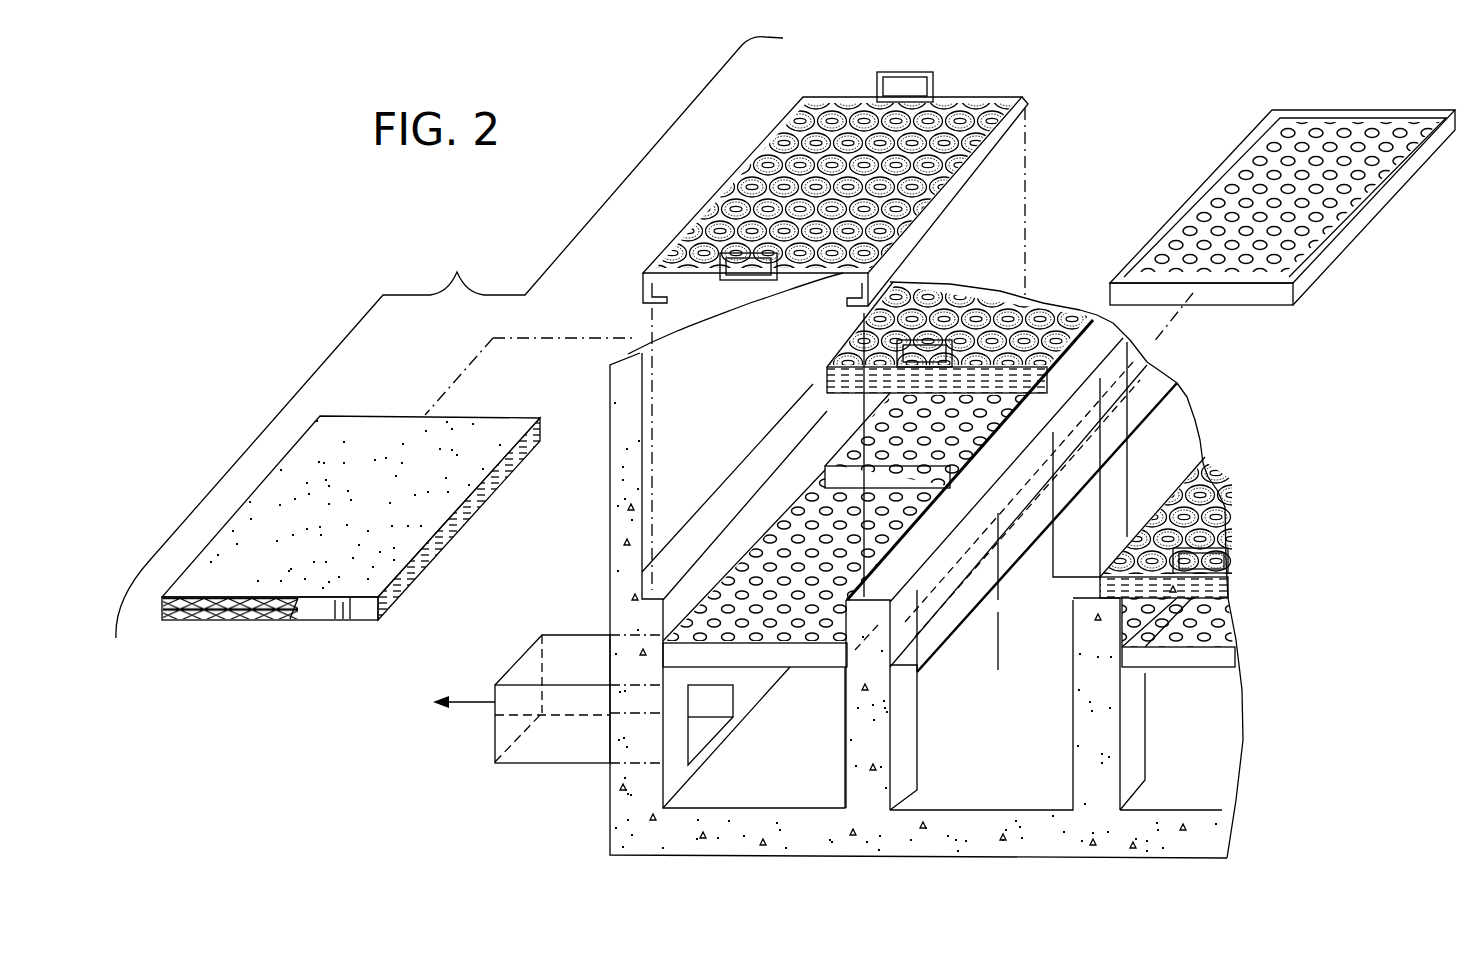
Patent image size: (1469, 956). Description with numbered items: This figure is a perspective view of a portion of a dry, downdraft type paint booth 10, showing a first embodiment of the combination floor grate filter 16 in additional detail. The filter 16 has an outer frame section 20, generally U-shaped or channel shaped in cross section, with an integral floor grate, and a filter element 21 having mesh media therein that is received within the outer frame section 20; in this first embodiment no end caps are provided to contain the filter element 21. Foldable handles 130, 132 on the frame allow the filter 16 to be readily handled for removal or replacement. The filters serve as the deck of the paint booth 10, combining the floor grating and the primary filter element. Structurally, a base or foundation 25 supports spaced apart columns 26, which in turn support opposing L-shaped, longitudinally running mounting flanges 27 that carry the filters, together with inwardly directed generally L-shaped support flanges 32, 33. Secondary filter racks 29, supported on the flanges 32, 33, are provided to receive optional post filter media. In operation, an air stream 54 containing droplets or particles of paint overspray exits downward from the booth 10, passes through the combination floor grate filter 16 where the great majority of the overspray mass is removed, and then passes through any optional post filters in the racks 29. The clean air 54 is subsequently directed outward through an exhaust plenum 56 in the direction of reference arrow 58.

The paint booth 10 is at (600, 568).
The combination floor grate filter 16 is at (1050, 247).
The outer frame section 20 is at (828, 206).
The filter element 21 is at (477, 503).
The base or foundation 25 is at (983, 810).
The columns 26 is at (1080, 738).
The mounting flange 27 is at (750, 460).
The secondary filter rack 29 is at (1347, 237).
The support flange 32 is at (923, 645).
The support flange 33 is at (1088, 595).
The air stream 54 is at (710, 697).
The exhaust plenum 56 is at (575, 753).
The reference arrow 58 is at (446, 700).
The foldable handle 130 is at (768, 260).
The foldable handle 132 is at (926, 70).